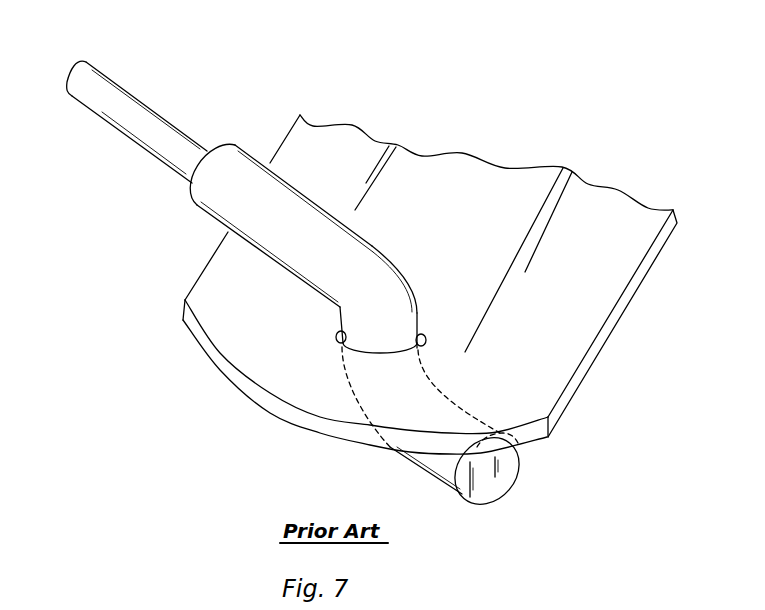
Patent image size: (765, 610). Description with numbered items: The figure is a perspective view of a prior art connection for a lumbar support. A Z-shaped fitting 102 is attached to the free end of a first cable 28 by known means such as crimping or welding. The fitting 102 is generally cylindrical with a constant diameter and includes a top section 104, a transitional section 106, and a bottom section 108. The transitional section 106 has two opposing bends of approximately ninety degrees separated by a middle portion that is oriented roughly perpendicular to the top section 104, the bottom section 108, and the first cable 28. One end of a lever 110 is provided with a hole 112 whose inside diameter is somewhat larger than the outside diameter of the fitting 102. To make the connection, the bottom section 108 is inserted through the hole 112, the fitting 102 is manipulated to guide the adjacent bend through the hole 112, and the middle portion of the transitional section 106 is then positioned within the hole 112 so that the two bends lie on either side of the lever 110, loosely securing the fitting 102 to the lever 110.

The first cable 28 is at (147, 123).
The Z-shaped fitting 102 is at (341, 224).
The top section 104 is at (335, 237).
The transitional section 106 is at (385, 288).
The bottom section 108 is at (517, 477).
The lever 110 is at (608, 317).
The hole 112 is at (422, 342).